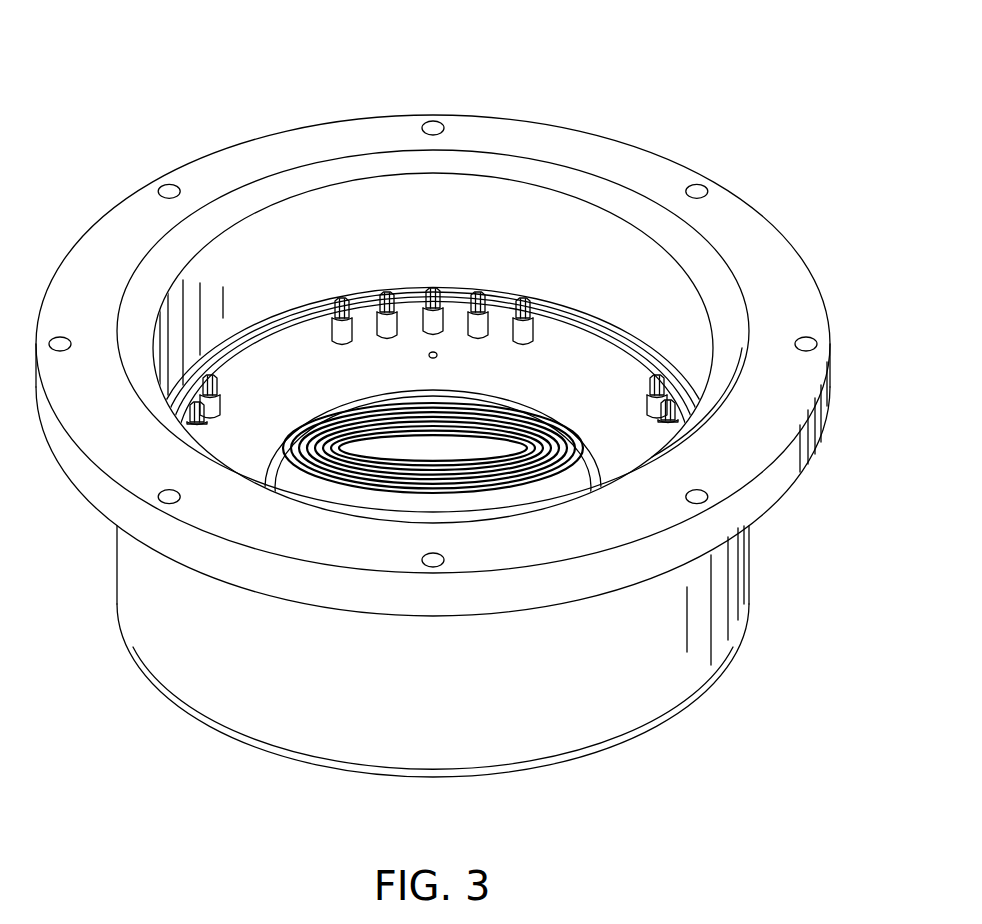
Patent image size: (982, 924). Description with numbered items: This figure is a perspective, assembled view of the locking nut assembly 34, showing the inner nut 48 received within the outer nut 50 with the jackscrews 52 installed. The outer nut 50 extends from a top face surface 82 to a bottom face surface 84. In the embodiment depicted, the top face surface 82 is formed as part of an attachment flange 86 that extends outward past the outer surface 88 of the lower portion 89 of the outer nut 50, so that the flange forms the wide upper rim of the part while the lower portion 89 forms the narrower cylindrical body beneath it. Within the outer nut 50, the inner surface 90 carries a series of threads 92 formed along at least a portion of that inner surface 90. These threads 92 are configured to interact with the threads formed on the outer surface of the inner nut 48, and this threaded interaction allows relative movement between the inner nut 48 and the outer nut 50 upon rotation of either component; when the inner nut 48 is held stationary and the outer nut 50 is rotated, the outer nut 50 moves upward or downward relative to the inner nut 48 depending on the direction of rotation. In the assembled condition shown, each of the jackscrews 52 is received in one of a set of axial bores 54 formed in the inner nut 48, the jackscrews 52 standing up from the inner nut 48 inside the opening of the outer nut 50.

The locking nut assembly 34 is at (740, 140).
The top face surface 82 is at (517, 133).
The attachment flange 86 is at (832, 378).
The inner surface 90 is at (340, 207).
The series of threads 92 is at (594, 322).
The inner nut 48 is at (313, 363).
The jackscrews 52 is at (546, 325).
The axial bores 54 is at (527, 334).
The outer nut 50 is at (783, 545).
The bottom face surface 84 is at (677, 705).
The outer surface 88 is at (749, 593).
The lower portion 89 is at (137, 600).